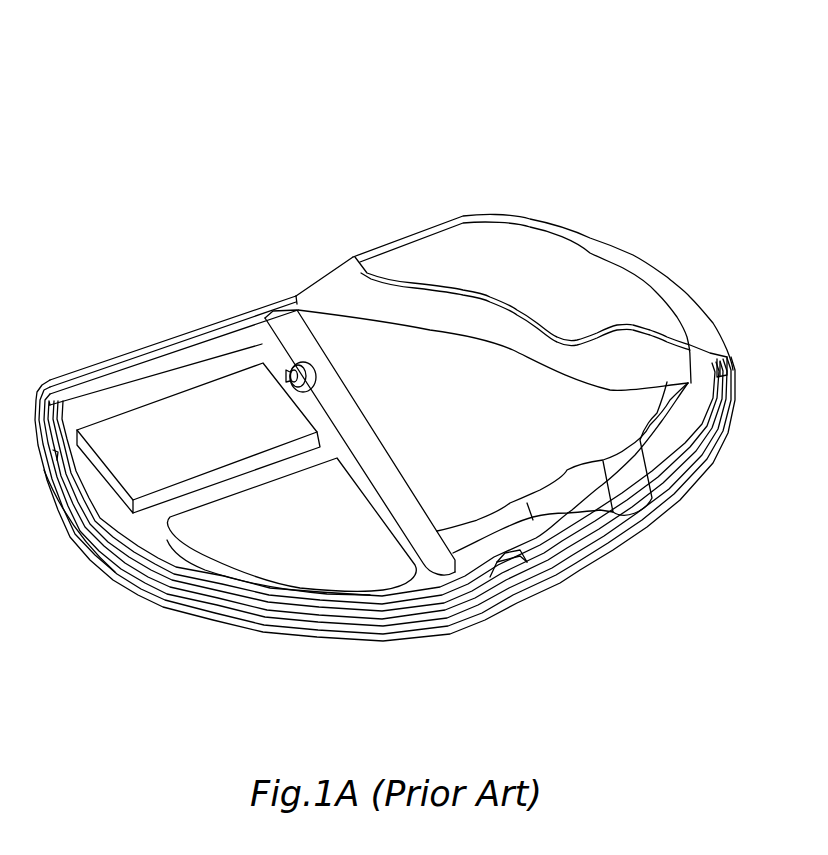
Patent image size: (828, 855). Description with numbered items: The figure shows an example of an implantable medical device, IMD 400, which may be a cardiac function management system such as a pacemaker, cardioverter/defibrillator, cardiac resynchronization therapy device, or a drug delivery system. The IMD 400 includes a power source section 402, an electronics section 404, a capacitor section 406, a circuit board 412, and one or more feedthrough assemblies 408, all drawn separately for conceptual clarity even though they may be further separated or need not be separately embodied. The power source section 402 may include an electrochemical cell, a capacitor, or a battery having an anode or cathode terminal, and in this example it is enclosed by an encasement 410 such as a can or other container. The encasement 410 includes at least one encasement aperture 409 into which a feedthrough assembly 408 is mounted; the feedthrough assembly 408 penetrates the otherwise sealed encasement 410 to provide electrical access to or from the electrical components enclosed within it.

The IMD 400 is at (93, 72).
The power source section 402 is at (567, 443).
The electronics section 404 is at (137, 427).
The capacitor section 406 is at (260, 600).
The feedthrough assembly 408 is at (302, 352).
The encasement aperture 409 is at (316, 376).
The encasement 410 is at (420, 490).
The circuit board 412 is at (135, 530).